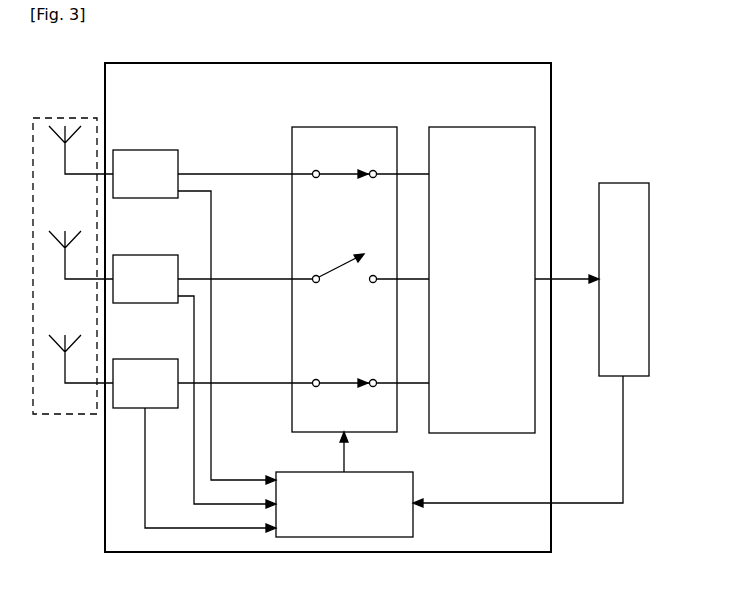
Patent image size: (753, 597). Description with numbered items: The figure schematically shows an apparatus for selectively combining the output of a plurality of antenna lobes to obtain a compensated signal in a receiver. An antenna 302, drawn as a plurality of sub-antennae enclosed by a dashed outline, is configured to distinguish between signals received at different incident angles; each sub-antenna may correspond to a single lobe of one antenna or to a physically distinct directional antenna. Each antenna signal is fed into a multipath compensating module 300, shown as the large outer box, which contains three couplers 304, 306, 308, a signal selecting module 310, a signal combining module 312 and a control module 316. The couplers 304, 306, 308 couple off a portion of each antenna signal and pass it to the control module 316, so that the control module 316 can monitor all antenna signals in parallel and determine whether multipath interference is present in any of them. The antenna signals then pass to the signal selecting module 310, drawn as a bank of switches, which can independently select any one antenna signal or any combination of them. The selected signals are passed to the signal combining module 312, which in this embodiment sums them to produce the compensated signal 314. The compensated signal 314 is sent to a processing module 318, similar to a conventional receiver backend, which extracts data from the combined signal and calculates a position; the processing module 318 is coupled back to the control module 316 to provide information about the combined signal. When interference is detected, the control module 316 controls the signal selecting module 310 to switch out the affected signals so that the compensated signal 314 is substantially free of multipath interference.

The multipath compensating module 300 is at (487, 63).
The antenna 302 is at (63, 415).
The coupler 304 is at (202, 317).
The coupler 306 is at (202, 381).
The coupler 308 is at (202, 445).
The signal selecting module 310 is at (370, 127).
The signal combining module 312 is at (486, 127).
The compensated signal 314 is at (566, 282).
The control module 316 is at (341, 538).
The processing module 318 is at (624, 183).